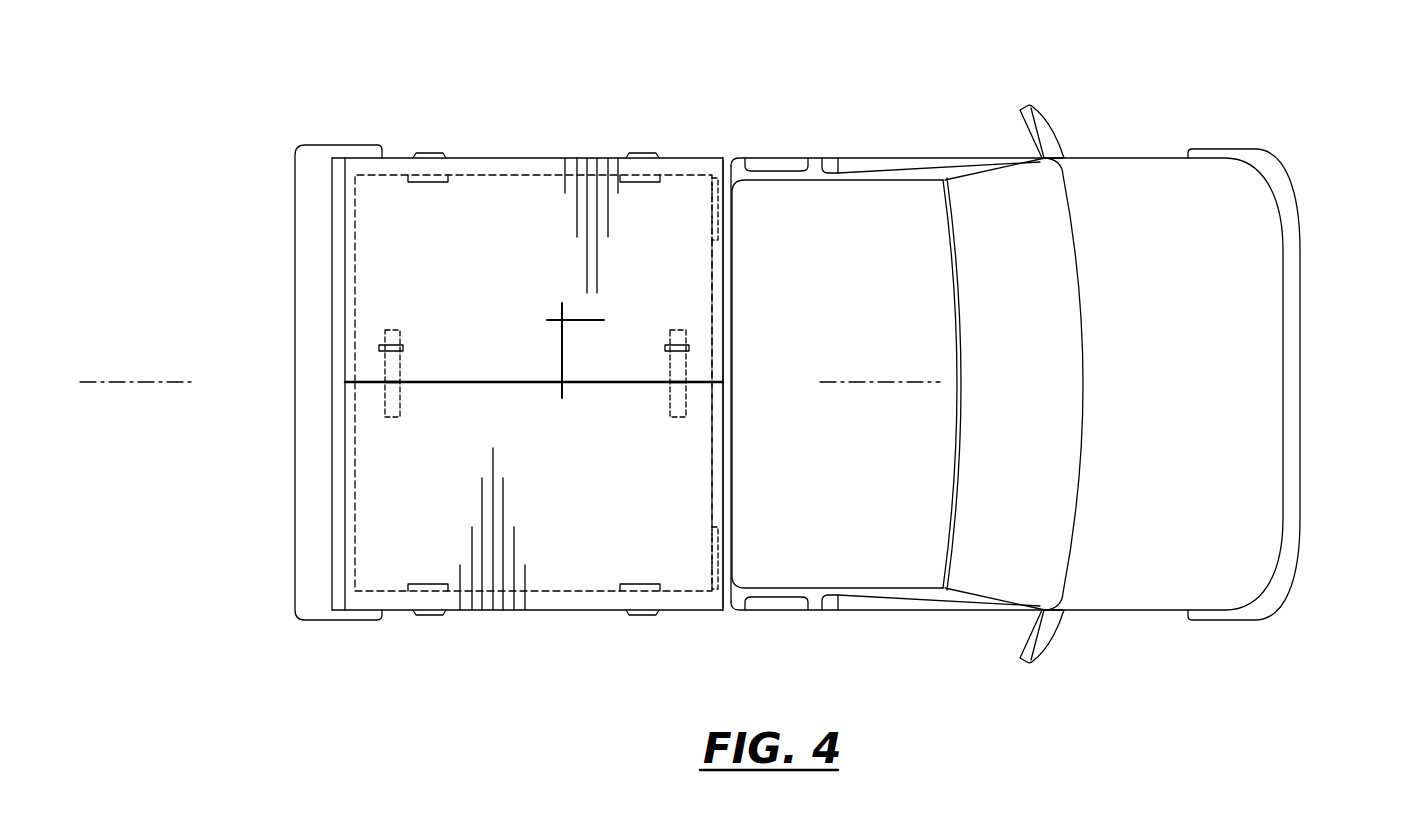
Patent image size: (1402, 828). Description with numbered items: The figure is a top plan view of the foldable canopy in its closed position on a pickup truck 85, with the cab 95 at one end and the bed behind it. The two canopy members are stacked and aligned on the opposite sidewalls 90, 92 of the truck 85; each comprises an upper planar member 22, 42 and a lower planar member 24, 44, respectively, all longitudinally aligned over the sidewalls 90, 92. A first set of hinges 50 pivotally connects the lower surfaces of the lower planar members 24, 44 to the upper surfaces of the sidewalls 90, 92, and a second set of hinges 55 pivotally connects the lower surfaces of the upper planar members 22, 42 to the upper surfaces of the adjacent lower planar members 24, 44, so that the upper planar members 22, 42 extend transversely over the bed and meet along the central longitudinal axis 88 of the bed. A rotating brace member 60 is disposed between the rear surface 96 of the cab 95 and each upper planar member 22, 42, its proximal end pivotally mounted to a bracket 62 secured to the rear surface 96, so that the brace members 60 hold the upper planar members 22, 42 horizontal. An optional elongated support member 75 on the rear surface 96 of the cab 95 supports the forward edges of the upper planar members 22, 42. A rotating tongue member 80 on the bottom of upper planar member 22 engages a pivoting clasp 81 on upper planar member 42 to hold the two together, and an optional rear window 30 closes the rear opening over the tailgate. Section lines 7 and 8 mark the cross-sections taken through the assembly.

The section line 7- 7 is at (232, 430).
The section line 8- 8 is at (640, 85).
The upper planar member 22 is at (511, 288).
The lower planar member 24 is at (477, 158).
The rear window 30 is at (345, 483).
The upper planar member 42 is at (590, 543).
The lower planar member 44 is at (580, 610).
The first set of hinges 50 is at (427, 153).
The second set of hinges 55 is at (433, 180).
The rotating brace member 60 is at (715, 210).
The bracket 62 is at (712, 240).
The elongated support member 75 is at (722, 470).
The rotating tongue member 80 is at (400, 348).
The pivoting clasp 81 is at (396, 403).
The pickup truck 85 is at (1262, 238).
The central longitudinal axis 88 is at (155, 384).
The sidewall 90 is at (512, 158).
The sidewall 92 is at (513, 612).
The cab 95 is at (883, 518).
The rear surface 96 is at (727, 450).